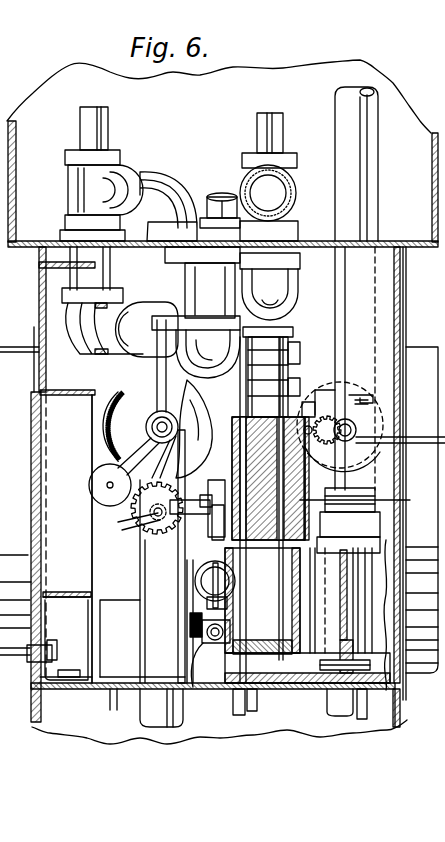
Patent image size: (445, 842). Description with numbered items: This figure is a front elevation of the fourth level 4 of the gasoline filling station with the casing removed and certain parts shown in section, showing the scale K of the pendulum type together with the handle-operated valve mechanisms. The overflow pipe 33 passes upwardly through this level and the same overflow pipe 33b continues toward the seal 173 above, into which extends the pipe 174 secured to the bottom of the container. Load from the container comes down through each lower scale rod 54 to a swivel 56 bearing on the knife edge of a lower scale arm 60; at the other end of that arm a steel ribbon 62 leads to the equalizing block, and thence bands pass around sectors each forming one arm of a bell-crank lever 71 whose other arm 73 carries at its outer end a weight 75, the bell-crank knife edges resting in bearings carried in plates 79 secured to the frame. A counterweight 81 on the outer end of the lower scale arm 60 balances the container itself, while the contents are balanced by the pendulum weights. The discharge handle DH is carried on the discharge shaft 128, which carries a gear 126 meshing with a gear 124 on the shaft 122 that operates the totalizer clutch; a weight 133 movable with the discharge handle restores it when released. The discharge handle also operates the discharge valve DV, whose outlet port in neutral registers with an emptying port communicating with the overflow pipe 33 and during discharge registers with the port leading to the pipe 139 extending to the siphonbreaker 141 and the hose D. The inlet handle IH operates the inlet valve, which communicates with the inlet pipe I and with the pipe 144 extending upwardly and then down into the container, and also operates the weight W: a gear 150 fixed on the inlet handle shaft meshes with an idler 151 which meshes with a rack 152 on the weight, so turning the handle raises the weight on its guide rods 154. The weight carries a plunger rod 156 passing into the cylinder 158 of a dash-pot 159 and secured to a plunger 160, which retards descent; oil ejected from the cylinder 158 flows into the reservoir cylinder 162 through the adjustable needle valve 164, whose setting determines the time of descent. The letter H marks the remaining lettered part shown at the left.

The siphonbreaker 141 is at (268, 128).
The pipe 174 is at (216, 197).
The liquid-tight and vapor-tight seal 173 is at (201, 202).
The hose D is at (288, 186).
The pipe 139 is at (276, 233).
The pipe 144 is at (370, 151).
The overflow pipe 33 is at (244, 292).
The fourth level 4 is at (411, 315).
The guide rods 154 is at (248, 343).
The discharge handle DH is at (158, 365).
The discharge valve DV is at (208, 362).
The rack 152 is at (307, 410).
The inlet handle IH is at (402, 409).
The idler 151 is at (389, 448).
The gear 150 is at (402, 447).
The discharge shaft 128 is at (112, 418).
The gear 126 is at (112, 444).
The scale K is at (110, 485).
The weight 133 is at (94, 495).
The bell-crank lever 71 is at (186, 465).
The gear 124 is at (120, 525).
The shaft 122 is at (60, 541).
The steel ribbon 62 is at (210, 547).
The arm 73 is at (187, 563).
The weight 75 is at (200, 581).
The lower scale rod 54 is at (203, 594).
The swivel 56 is at (190, 614).
The plates 79 is at (187, 650).
The lower scale arm 60 is at (214, 646).
The counterweight 81 is at (196, 695).
The pipe 33b is at (155, 706).
The plunger rod 156 is at (228, 709).
The dash-pot 159 is at (248, 717).
The plunger 160 is at (274, 653).
The inlet pipe I is at (347, 717).
The adjustable needle valve 164 is at (372, 719).
The cylinder 158 is at (405, 707).
The reservoir cylinder 162 is at (348, 520).
The weight W is at (366, 504).
The link H is at (19, 322).